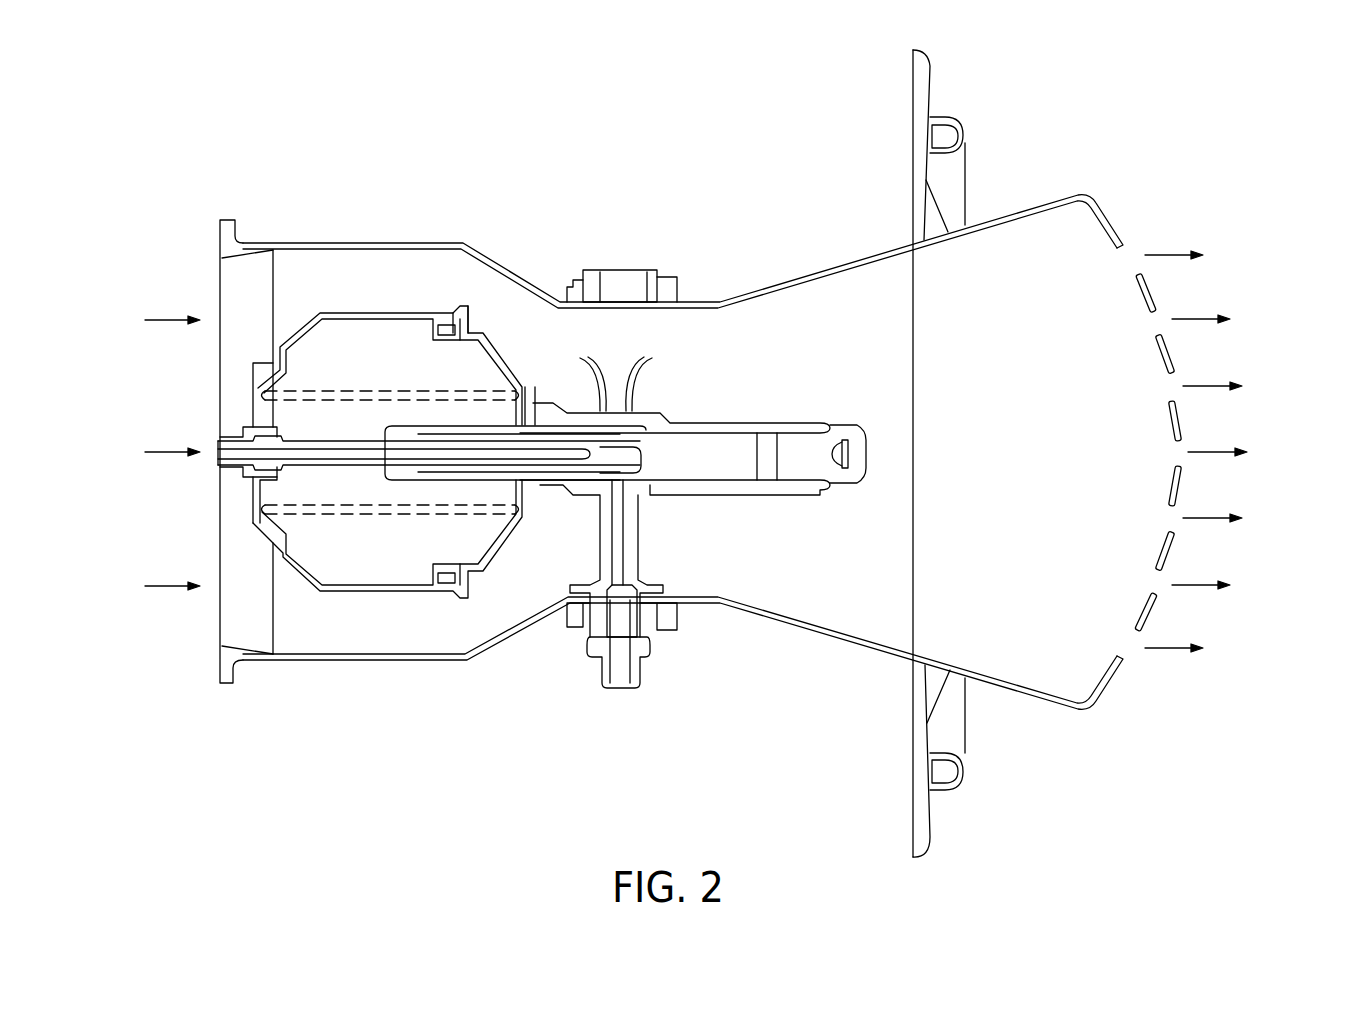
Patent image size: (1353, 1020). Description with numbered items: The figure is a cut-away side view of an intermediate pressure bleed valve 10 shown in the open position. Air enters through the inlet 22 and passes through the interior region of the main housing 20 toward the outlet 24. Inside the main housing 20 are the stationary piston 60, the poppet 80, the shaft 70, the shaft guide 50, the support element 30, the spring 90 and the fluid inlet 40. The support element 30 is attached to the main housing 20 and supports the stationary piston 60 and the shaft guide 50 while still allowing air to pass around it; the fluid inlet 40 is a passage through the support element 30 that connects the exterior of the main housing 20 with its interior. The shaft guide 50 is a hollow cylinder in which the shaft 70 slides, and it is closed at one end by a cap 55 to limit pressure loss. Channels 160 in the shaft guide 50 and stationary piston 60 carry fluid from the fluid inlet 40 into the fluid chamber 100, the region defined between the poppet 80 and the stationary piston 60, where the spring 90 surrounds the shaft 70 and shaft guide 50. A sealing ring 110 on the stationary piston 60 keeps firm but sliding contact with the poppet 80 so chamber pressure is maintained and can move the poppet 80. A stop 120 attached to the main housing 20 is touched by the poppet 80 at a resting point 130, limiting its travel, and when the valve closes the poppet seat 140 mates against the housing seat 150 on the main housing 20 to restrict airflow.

The bleed valve 10 is at (272, 151).
The main housing 20 is at (423, 661).
The inlet 22 is at (145, 398).
The outlet flow 24 is at (1250, 346).
The support element 30 is at (640, 520).
The fluid inlet 40 is at (613, 542).
The shaft guide 50 is at (793, 423).
The cap 55 is at (867, 450).
The stationary piston 60 is at (485, 563).
The shaft 70 is at (293, 470).
The poppet 80 is at (410, 313).
The spring 90 is at (382, 514).
The fluid chamber 100 is at (352, 330).
The sealing ring 110 is at (433, 333).
The stop 120 is at (273, 593).
The resting point 130 is at (287, 551).
The poppet seat 140 is at (468, 310).
The housing seat 150 is at (575, 305).
The channels 160 is at (462, 427).